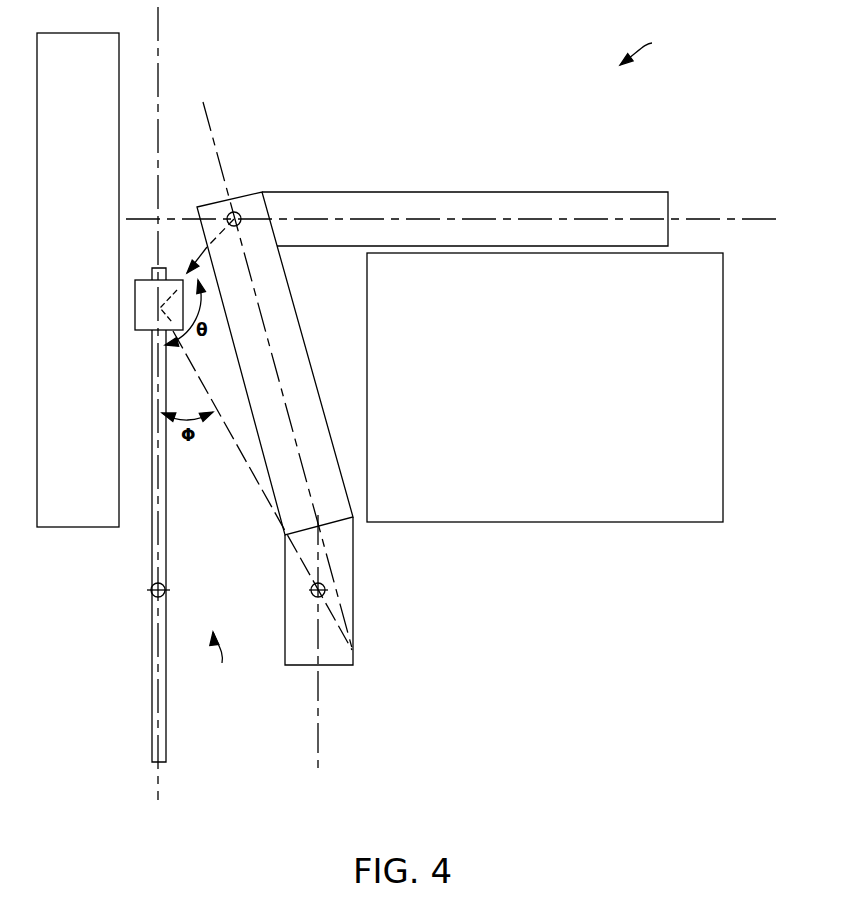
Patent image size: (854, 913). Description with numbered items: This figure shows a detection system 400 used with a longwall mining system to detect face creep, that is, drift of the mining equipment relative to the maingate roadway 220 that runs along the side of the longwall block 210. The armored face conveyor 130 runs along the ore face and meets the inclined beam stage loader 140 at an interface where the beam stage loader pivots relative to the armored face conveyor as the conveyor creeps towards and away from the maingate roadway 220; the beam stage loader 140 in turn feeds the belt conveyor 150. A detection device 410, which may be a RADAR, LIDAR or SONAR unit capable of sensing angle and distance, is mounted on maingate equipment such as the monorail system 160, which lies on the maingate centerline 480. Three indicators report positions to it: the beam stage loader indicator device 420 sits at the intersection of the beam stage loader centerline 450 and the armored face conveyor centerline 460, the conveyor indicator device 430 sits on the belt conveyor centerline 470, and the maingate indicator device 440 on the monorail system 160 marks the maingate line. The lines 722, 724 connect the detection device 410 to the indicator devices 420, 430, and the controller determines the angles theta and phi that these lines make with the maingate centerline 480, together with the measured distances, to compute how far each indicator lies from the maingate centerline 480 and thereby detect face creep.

The armored face conveyor 130 is at (668, 227).
The beam stage loader 140 is at (293, 302).
The belt conveyor 150 is at (285, 617).
The monorail system 160 is at (152, 733).
The longwall block 210 is at (545, 387).
The maingate roadway 220 is at (223, 662).
The detection system 400 is at (656, 47).
The detection device 410 is at (143, 305).
The beam stage loader indicator device 420 is at (200, 217).
The conveyor indicator device 430 is at (311, 590).
The maingate indicator device 440 is at (151, 594).
The beam stage loader centerline 450 is at (220, 172).
The armored face conveyor centerline 460 is at (762, 220).
The belt conveyor centerline 470 is at (315, 733).
The maingate centerline 480 is at (158, 663).
The line connecting detection device to indicator device 722 is at (183, 265).
The line connecting detection device to indicator device 724 is at (263, 497).